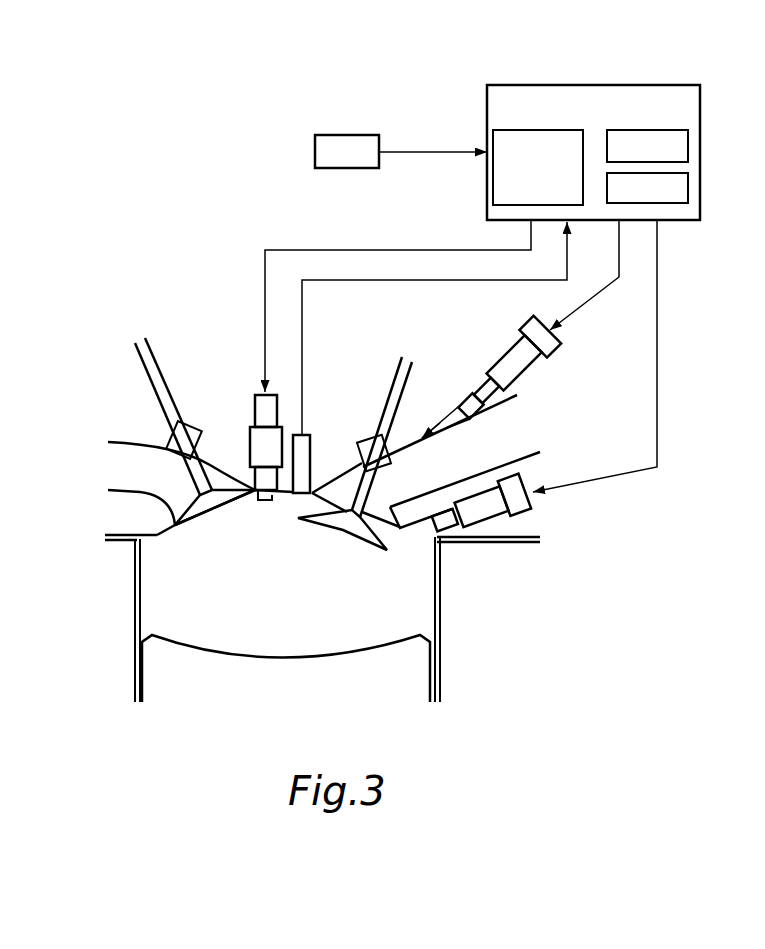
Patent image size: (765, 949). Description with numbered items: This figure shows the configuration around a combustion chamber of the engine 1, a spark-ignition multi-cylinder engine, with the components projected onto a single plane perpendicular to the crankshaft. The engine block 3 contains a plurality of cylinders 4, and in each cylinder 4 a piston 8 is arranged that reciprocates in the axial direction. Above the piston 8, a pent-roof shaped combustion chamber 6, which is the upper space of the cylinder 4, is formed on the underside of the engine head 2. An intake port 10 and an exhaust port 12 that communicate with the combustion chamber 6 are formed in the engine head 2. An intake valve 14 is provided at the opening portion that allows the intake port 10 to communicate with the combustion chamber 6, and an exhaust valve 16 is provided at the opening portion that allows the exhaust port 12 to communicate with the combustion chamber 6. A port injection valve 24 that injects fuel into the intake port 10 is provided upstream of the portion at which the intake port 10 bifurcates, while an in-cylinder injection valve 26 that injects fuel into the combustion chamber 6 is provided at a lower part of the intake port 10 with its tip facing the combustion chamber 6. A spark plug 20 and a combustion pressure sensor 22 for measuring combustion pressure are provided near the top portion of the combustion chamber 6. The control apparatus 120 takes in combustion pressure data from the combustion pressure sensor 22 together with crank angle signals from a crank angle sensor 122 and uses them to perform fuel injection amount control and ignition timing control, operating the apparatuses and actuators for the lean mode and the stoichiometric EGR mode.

The engine 1 is at (138, 247).
The engine head 2 is at (120, 412).
The engine block 3 is at (108, 618).
The cylinder 4 is at (138, 572).
The combustion chamber 6 is at (250, 520).
The piston 8 is at (383, 650).
The intake port 10 is at (468, 485).
The exhaust port 12 is at (143, 493).
The intake valve 14 is at (378, 428).
The exhaust valve 16 is at (174, 400).
The spark plug 20 is at (250, 445).
The combustion pressure sensor 22 is at (311, 487).
The port injection valve 24 is at (503, 358).
The in-cylinder injection valve 26 is at (503, 518).
The control apparatus 120 is at (586, 85).
The crank angle sensor 122 is at (343, 135).